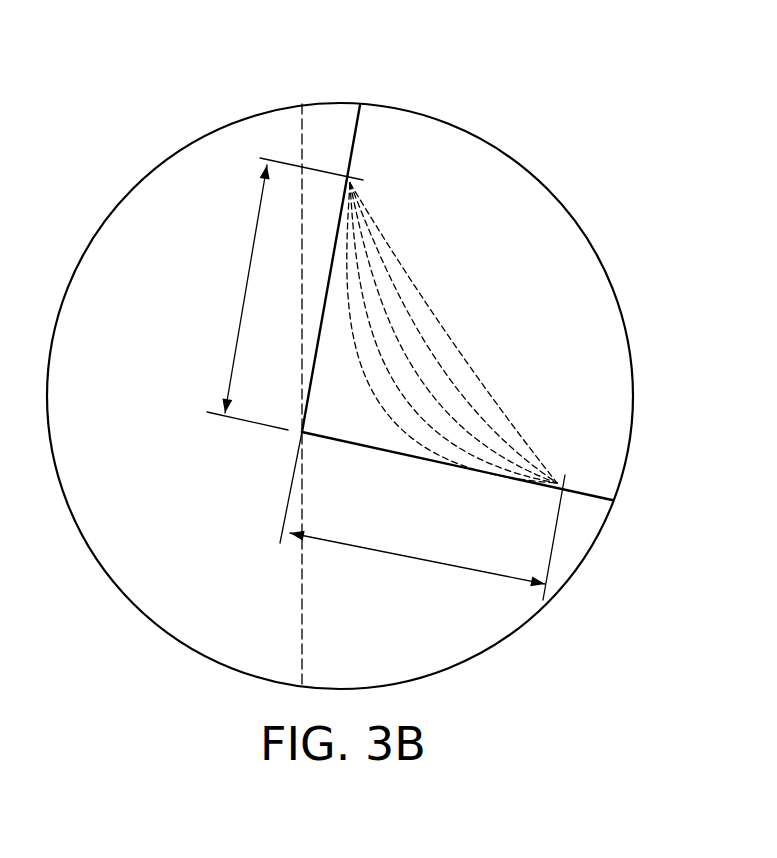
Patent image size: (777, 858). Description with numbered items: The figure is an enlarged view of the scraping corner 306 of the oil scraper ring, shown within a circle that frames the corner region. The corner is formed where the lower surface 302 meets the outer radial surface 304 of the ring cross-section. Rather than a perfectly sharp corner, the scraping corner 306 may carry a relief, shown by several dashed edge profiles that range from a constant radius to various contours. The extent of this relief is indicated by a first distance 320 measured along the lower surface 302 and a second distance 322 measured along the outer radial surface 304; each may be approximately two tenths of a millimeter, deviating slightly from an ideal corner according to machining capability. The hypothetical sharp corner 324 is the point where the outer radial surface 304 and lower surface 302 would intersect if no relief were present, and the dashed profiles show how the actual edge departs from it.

The lower surface 302 is at (590, 497).
The outer radial surface 304 is at (355, 131).
The scraping corner 306 is at (466, 640).
The first distance 320 is at (408, 557).
The second distance 322 is at (252, 262).
The hypothetical sharp corner 324 is at (282, 447).